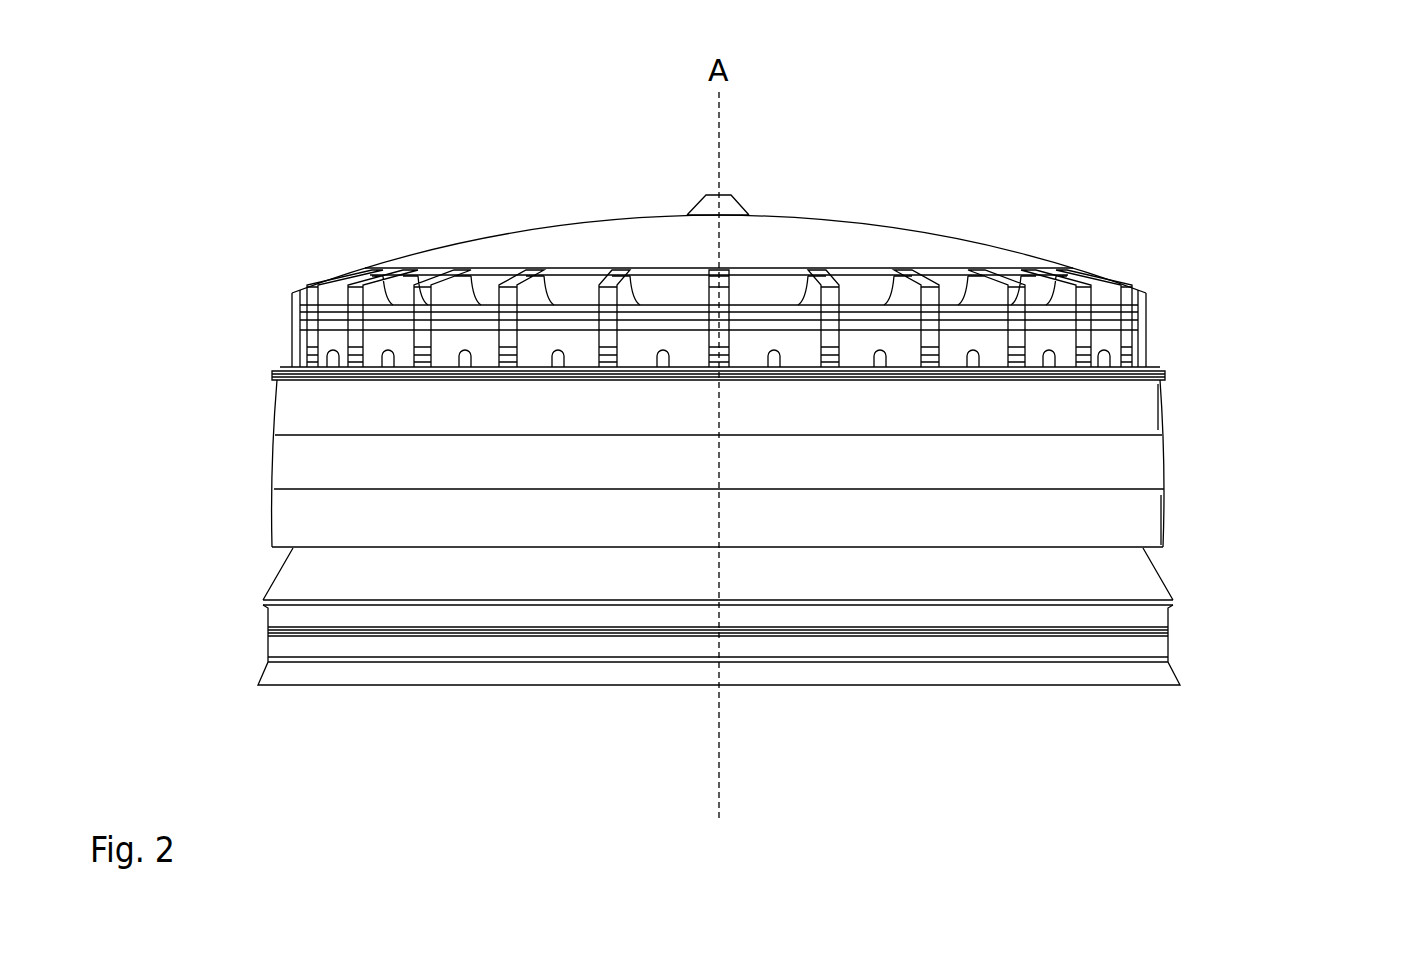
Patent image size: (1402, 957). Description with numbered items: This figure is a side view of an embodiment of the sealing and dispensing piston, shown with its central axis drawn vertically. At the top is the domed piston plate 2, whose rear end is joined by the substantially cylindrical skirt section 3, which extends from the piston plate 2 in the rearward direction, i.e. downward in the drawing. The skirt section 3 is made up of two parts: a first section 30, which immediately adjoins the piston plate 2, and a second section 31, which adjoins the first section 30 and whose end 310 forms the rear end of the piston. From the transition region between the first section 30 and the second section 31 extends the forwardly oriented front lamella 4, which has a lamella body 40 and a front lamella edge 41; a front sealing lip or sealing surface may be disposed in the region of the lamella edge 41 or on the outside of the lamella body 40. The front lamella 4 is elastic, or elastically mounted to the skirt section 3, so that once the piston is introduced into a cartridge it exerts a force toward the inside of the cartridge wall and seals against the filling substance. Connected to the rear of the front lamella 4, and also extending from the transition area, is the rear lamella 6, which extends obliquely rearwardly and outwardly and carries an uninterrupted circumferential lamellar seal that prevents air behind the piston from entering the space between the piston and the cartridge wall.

The piston plate 2 is at (615, 240).
The skirt section 3 is at (632, 441).
The first section 30 is at (466, 324).
The second section 31 is at (362, 522).
The end 310 is at (448, 685).
The front lamella 4 is at (1162, 405).
The lamella body 40 is at (290, 408).
The front lamella edge 41 is at (288, 375).
The rear lamella 6 is at (1160, 520).